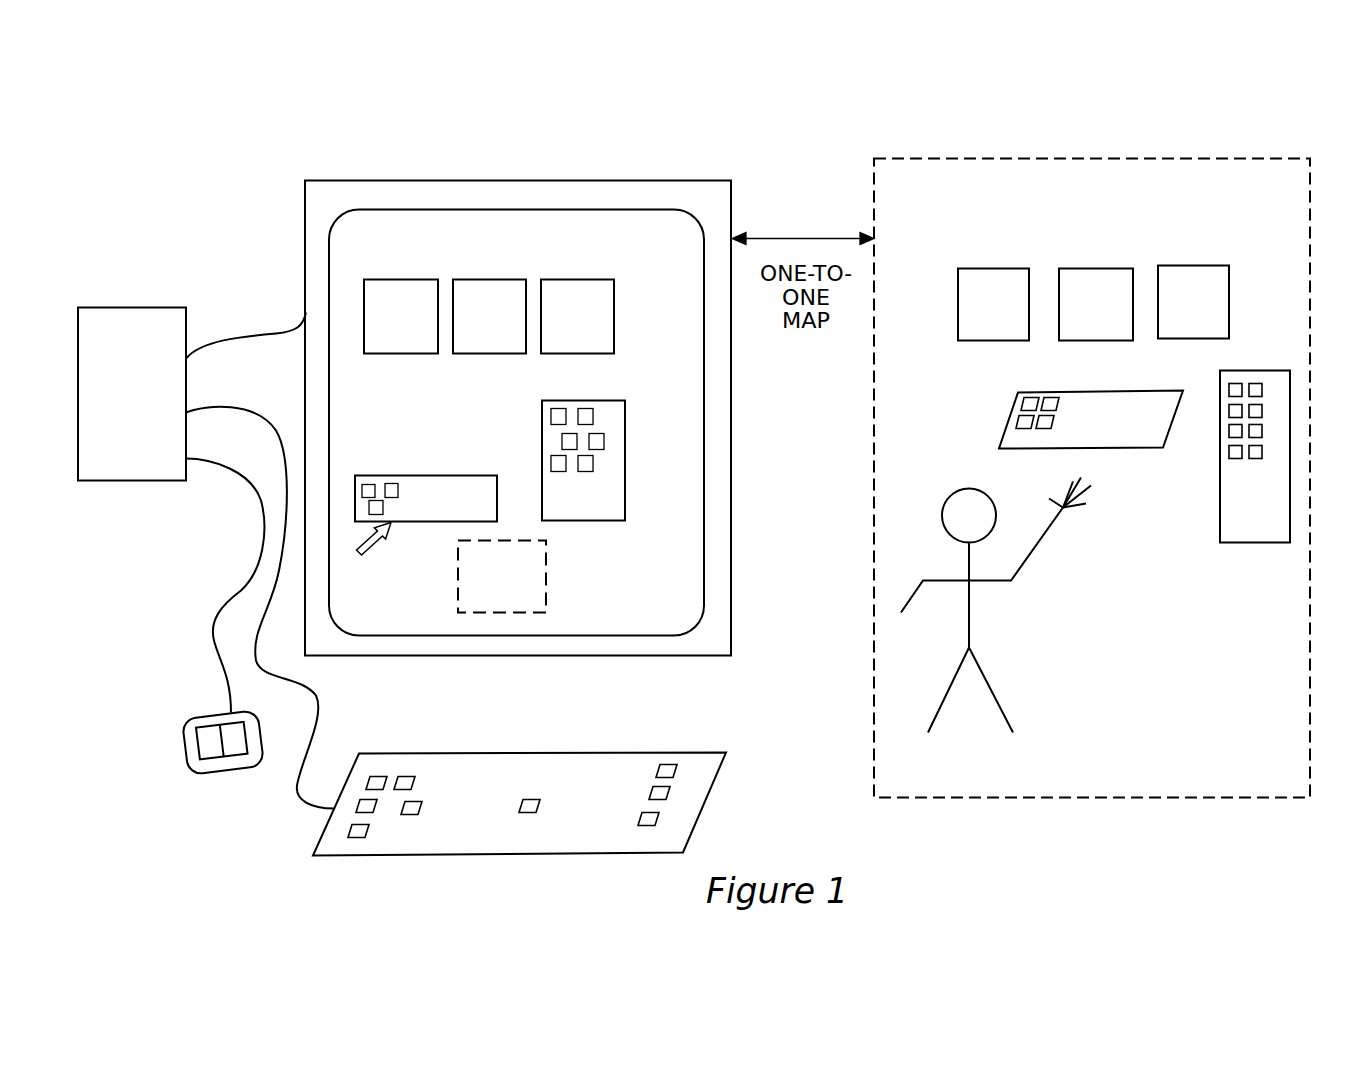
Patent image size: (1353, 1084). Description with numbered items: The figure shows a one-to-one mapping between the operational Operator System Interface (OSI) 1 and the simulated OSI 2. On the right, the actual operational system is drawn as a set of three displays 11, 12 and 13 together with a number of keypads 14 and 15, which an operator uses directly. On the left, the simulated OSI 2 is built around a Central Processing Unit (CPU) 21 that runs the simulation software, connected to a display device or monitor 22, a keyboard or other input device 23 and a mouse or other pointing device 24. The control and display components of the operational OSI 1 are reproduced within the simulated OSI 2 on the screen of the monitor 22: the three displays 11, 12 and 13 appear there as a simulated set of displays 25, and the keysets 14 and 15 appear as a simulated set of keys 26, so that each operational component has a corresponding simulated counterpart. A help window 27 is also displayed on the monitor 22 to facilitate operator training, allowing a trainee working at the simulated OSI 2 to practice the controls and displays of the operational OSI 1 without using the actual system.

The operational Operator System Interface (OSI) 1 is at (1141, 147).
The simulated OSI 2 is at (338, 166).
The display 11 is at (1000, 268).
The display 12 is at (1097, 268).
The display 13 is at (1188, 265).
The keypad 14 is at (1012, 410).
The keypad 15 is at (1276, 370).
The Central Processing Unit (CPU) 21 is at (146, 306).
The monitor 22 is at (515, 180).
The keyboard 23 is at (705, 802).
The mouse 24 is at (196, 725).
The simulated set of displays 25 is at (611, 268).
The simulated set of keys 26 is at (538, 412).
The help window 27 is at (545, 587).